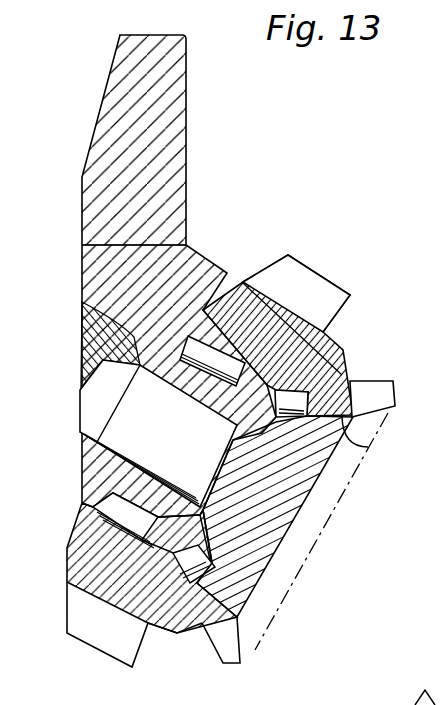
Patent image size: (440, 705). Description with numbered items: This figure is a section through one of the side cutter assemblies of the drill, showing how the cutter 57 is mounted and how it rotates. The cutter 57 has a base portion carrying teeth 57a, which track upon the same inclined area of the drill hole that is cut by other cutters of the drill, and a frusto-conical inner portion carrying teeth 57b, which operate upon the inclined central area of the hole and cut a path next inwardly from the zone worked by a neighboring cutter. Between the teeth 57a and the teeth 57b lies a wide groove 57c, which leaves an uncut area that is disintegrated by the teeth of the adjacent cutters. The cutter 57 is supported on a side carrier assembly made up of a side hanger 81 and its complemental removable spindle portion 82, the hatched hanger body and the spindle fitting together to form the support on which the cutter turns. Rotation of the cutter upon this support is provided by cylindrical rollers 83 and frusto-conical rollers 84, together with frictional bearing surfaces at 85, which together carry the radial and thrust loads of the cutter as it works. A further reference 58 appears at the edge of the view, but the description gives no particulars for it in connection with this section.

The cutter 57 is at (277, 308).
The teeth 57a is at (108, 648).
The teeth 57b is at (240, 660).
The wide groove 57c is at (182, 638).
The adjacent member 58 is at (356, 704).
The side hanger 81 is at (192, 267).
The removable spindle portion 82 is at (95, 418).
The cylindrical rollers 83 is at (190, 362).
The frusto-conical rollers 84 is at (295, 398).
The frictional bearing surfaces 85 is at (367, 447).